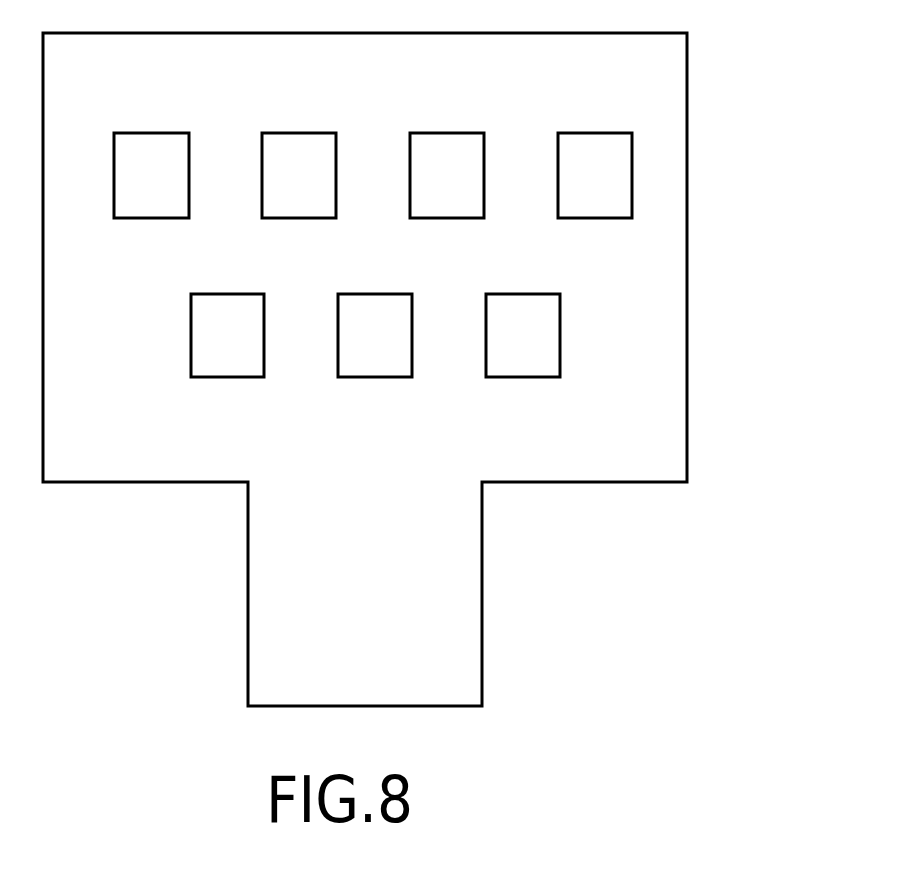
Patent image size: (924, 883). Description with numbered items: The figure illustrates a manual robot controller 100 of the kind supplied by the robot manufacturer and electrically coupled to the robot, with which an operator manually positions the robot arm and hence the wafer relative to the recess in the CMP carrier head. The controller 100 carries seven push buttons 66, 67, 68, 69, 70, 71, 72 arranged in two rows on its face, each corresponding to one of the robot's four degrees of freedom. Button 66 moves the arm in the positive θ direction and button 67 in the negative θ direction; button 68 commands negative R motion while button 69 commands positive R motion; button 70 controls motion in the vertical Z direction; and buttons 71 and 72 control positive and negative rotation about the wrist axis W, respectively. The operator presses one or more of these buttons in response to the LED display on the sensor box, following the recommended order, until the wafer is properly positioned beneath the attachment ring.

The robot controller 100 is at (687, 173).
The button 66 is at (156, 133).
The button 67 is at (307, 133).
The button 68 is at (447, 133).
The button 69 is at (600, 133).
The button 70 is at (219, 294).
The button 71 is at (367, 294).
The button 72 is at (517, 294).